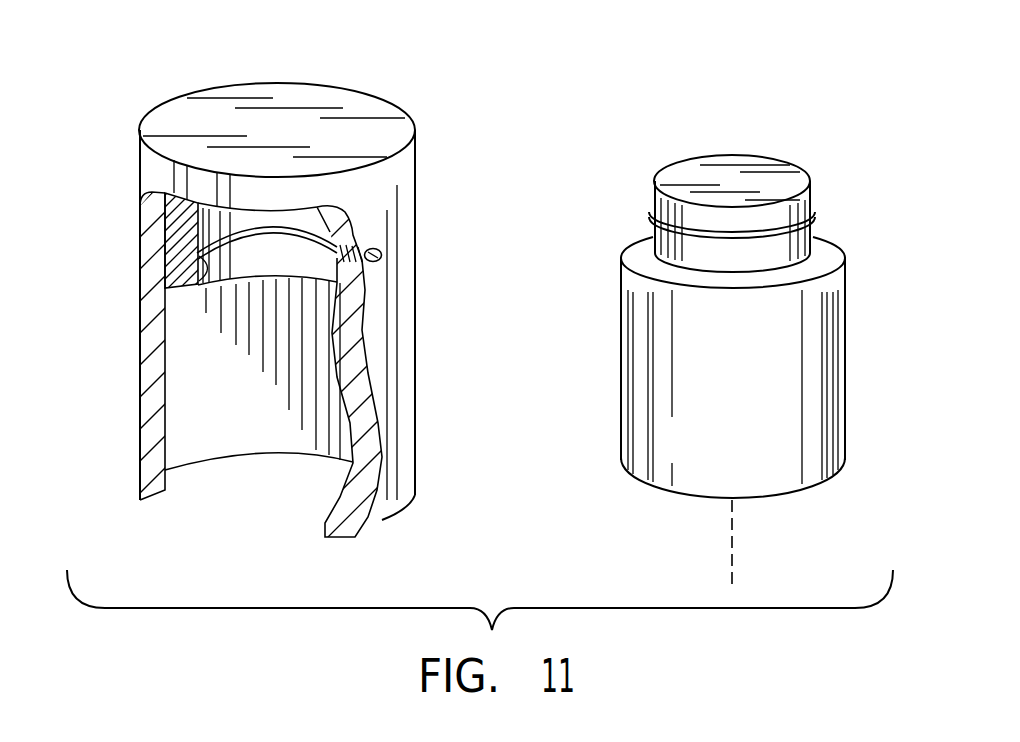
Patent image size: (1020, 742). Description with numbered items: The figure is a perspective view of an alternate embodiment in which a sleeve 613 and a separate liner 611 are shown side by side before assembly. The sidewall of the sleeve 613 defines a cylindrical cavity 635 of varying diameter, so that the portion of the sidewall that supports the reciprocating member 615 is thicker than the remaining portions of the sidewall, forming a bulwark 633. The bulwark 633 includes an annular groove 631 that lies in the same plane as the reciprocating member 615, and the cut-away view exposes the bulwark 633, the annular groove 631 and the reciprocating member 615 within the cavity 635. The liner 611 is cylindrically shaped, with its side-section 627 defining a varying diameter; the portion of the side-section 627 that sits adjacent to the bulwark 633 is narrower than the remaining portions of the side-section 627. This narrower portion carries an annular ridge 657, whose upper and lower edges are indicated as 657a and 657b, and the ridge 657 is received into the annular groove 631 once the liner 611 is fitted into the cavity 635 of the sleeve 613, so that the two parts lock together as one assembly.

The sleeve 613 is at (176, 64).
The bulwark 633 is at (178, 232).
The annular groove 631 is at (165, 290).
The cylindrical cavity 635 is at (228, 360).
The reciprocating member 615 is at (380, 245).
The liner 611 is at (634, 118).
The annular ridge 657 is at (817, 218).
The ring upper edge 657a is at (812, 213).
The ring lower edge 657b is at (816, 232).
The side-section 627 is at (622, 348).